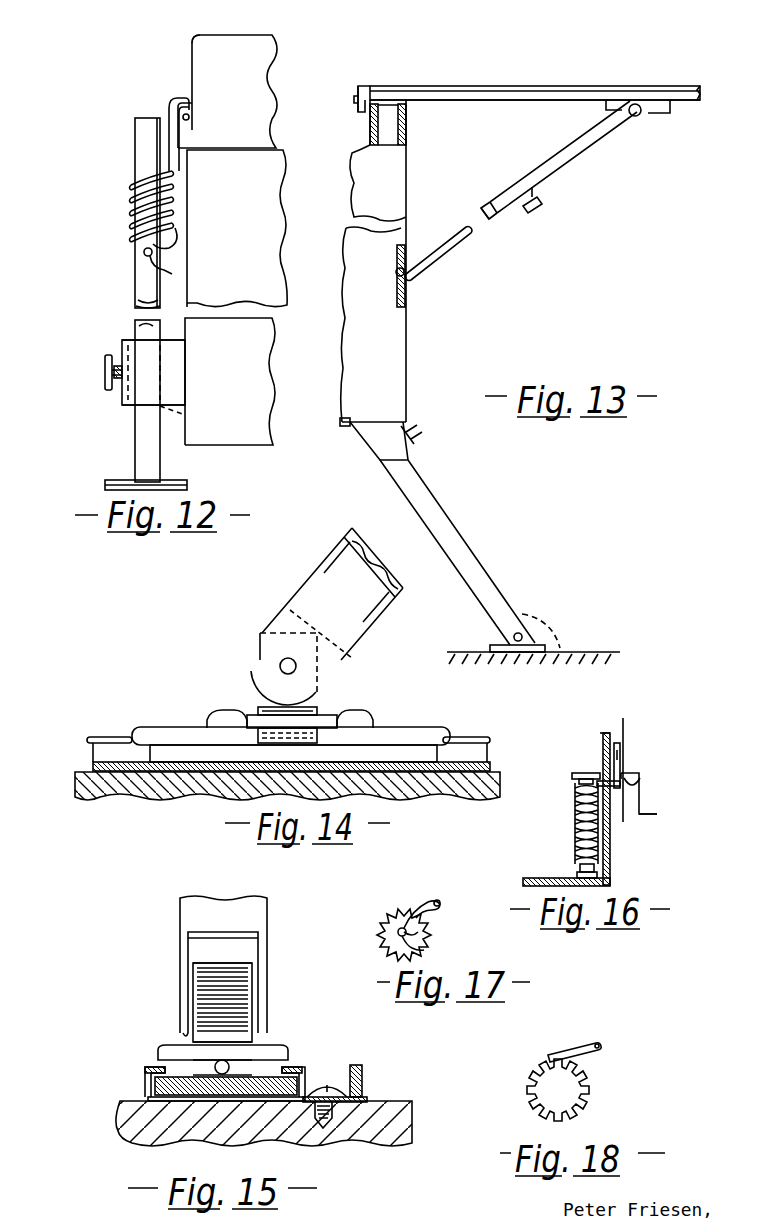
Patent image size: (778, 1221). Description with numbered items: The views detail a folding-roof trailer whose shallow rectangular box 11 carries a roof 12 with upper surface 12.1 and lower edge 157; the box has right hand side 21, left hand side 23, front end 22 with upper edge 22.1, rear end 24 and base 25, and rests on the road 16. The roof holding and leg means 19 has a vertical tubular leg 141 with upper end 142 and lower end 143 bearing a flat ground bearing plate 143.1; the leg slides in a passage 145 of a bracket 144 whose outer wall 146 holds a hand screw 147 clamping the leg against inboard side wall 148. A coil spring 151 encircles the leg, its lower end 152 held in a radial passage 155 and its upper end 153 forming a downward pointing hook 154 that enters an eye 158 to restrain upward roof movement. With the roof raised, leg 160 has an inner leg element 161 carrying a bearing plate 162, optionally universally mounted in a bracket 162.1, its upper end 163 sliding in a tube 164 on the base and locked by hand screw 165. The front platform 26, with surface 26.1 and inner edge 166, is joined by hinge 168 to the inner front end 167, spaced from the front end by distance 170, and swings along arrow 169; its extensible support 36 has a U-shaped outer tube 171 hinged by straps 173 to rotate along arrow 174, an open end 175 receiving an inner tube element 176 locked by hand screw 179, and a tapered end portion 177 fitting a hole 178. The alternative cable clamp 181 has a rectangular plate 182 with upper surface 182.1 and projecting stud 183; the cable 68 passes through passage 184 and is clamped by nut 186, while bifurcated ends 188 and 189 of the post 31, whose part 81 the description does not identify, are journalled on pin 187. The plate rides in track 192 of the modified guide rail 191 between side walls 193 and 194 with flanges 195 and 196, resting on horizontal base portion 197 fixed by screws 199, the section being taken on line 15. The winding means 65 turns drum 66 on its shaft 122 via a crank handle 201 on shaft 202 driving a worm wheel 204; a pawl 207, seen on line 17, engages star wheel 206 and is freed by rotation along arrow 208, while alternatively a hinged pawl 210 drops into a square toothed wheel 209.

In FIG. 12, the box 11 is at (290, 190).
In FIG. 13, the box 11 is at (442, 178).
In FIG. 12, the roof 12 is at (254, 76).
In FIG. 12, the upper surface 12.1 is at (204, 35).
In FIG. 14, the section line 15— 15 is at (208, 580).
In FIG. 13, the road 16 is at (621, 651).
In FIG. 16, the section line 17— 17 is at (606, 722).
In FIG. 12, the roof holding and leg means 19 is at (127, 248).
In FIG. 12, the right hand side 21 is at (254, 248).
In FIG. 13, the right hand side 21 is at (386, 175).
In FIG. 13, the front end 22 is at (415, 342).
In FIG. 13, the upper edge 22.1 is at (404, 101).
In FIG. 16, the left hand side 23 is at (610, 841).
In FIG. 12, the rear end 24 is at (190, 196).
In FIG. 13, the base 25 is at (346, 421).
In FIG. 14, the base 25 is at (106, 794).
In FIG. 16, the base 25 is at (552, 868).
In FIG. 15, the base 25 is at (150, 1133).
In FIG. 13, the front platform 26 is at (662, 94).
In FIG. 13, the surface 26.1 is at (560, 96).
In FIG. 14, the post 31 is at (317, 557).
In FIG. 15, the post 31 is at (200, 896).
In FIG. 13, the extensible support 36 is at (590, 174).
In FIG. 16, the means to wind the drum 65 is at (644, 769).
In FIG. 16, the winding drum 66 is at (578, 836).
In FIG. 14, the cable 68 is at (164, 728).
In FIG. 15, the cable 68 is at (185, 1040).
In FIG. 14, the tube edge 81 is at (307, 588).
In FIG. 16, the shaft 122 is at (574, 787).
In FIG. 12, the vertical tubular leg 141 is at (138, 289).
In FIG. 12, the upper end 142 is at (135, 140).
In FIG. 12, the lower end 143 is at (132, 431).
In FIG. 12, the flat ground bearing plate 143.1 is at (180, 482).
In FIG. 12, the bracket 144 is at (172, 375).
In FIG. 12, the passage 145 is at (121, 405).
In FIG. 12, the outer wall 146 is at (122, 343).
In FIG. 12, the hand screw 147 is at (104, 372).
In FIG. 12, the inboard side wall 148 is at (185, 415).
In FIG. 12, the coil spring 151 is at (125, 212).
In FIG. 12, the lower end 152 is at (142, 253).
In FIG. 12, the upper end 153 is at (180, 150).
In FIG. 12, the downward pointing hook 154 is at (172, 100).
In FIG. 12, the radial passage 155 is at (172, 274).
In FIG. 12, the lower edge 157 is at (188, 145).
In FIG. 12, the eye 158 is at (190, 115).
In FIG. 13, the leg 160 is at (448, 512).
In FIG. 13, the inner leg element 161 is at (457, 545).
In FIG. 13, the bearing plate 162 is at (538, 645).
In FIG. 13, the bracket 162.1 is at (528, 614).
In FIG. 13, the upper end 163 is at (412, 484).
In FIG. 13, the tube 164 is at (377, 460).
In FIG. 13, the hand screw 165 is at (417, 437).
In FIG. 13, the inner edge 166 is at (381, 87).
In FIG. 13, the inner front end 167 is at (371, 135).
In FIG. 13, the hinge 168 is at (358, 98).
In FIG. 13, the arrow 169 is at (507, 24).
In FIG. 13, the distance 170 is at (385, 132).
In FIG. 13, the U-shaped outer tube 171 is at (593, 135).
In FIG. 13, the straps 173 is at (631, 112).
In FIG. 13, the arrow 174 is at (553, 222).
In FIG. 13, the open end 175 is at (496, 206).
In FIG. 13, the inner tube element 176 is at (442, 253).
In FIG. 13, the tapered end portion 177 is at (406, 277).
In FIG. 13, the hole 178 is at (392, 255).
In FIG. 13, the hand screw 179 is at (538, 210).
In FIG. 14, the alternative cable clamp 181 is at (237, 668).
In FIG. 15, the alternative cable clamp 181 is at (276, 953).
In FIG. 14, the rectangular plate 182 is at (393, 752).
In FIG. 15, the rectangular plate 182 is at (157, 1082).
In FIG. 14, the upper surface 182.1 is at (219, 717).
In FIG. 15, the upper surface 182.1 is at (165, 1057).
In FIG. 14, the projecting stud 183 is at (309, 711).
In FIG. 15, the projecting stud 183 is at (208, 967).
In FIG. 15, the passage 184 is at (243, 1029).
In FIG. 14, the nut 186 is at (368, 716).
In FIG. 15, the nut 186 is at (274, 1048).
In FIG. 14, the pin 187 is at (280, 665).
In FIG. 15, the pin 187 is at (190, 993).
In FIG. 14, the end 188 is at (338, 658).
In FIG. 15, the end 188 is at (260, 975).
In FIG. 15, the end 189 is at (184, 949).
In FIG. 14, the modified guide rail 191 is at (482, 700).
In FIG. 15, the modified guide rail 191 is at (356, 1014).
In FIG. 15, the track 192 is at (346, 1062).
In FIG. 14, the vertical side wall 193 is at (106, 753).
In FIG. 15, the vertical side wall 193 is at (117, 1101).
In FIG. 15, the vertical side wall 194 is at (308, 1090).
In FIG. 14, the horizontal flange 195 is at (100, 736).
In FIG. 15, the horizontal flange 195 is at (145, 1068).
In FIG. 15, the horizontal flange 196 is at (286, 1067).
In FIG. 14, the horizontal base portion 197 is at (488, 747).
In FIG. 15, the horizontal base portion 197 is at (151, 1133).
In FIG. 15, the screws 199 is at (331, 1128).
In FIG. 16, the crank handle 201 is at (653, 813).
In FIG. 16, the shaft 202 is at (622, 766).
In FIG. 17, the shaft 202 is at (424, 956).
In FIG. 16, the worm wheel 204 is at (575, 778).
In FIG. 16, the star wheel 206 is at (644, 787).
In FIG. 17, the star wheel 206 is at (429, 935).
In FIG. 16, the pawl 207 is at (606, 780).
In FIG. 17, the pawl 207 is at (441, 907).
In FIG. 17, the arrow 208 is at (444, 884).
In FIG. 18, the square toothed wheel 209 is at (587, 1096).
In FIG. 18, the hinged pawl 210 is at (577, 1045).